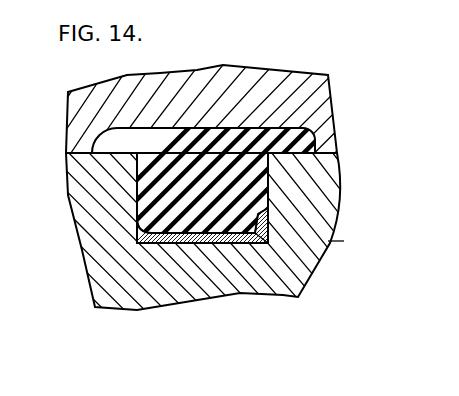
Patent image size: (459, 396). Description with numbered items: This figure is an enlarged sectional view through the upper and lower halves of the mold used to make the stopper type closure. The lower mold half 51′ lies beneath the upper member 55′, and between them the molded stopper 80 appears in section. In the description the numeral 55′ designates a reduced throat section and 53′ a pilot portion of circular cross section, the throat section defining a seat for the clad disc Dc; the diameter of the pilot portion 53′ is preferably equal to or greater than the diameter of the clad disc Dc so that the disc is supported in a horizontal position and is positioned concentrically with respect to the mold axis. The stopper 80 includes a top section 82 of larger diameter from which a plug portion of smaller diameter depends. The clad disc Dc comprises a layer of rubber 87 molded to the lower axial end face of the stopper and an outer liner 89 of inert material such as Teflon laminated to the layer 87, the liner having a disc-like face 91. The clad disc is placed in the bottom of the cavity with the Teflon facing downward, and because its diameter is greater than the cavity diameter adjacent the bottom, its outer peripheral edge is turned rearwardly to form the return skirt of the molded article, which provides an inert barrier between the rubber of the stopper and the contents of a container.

The reduced throat section 55′ is at (305, 82).
The lower housing member 51′ is at (122, 298).
The pilot portion 53′ is at (137, 208).
The stopper 80 is at (258, 183).
The top section 82 is at (305, 142).
The layer of rubber 87 is at (265, 228).
The outer liner 89 is at (137, 243).
The disc-like face 91 is at (210, 247).
The clad disc Dc is at (349, 246).